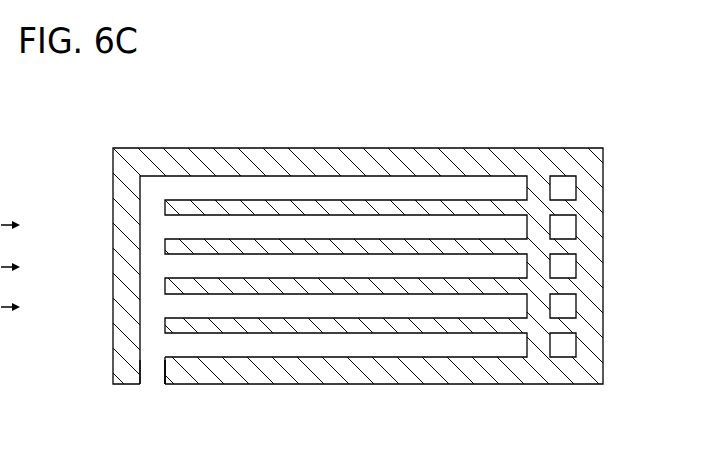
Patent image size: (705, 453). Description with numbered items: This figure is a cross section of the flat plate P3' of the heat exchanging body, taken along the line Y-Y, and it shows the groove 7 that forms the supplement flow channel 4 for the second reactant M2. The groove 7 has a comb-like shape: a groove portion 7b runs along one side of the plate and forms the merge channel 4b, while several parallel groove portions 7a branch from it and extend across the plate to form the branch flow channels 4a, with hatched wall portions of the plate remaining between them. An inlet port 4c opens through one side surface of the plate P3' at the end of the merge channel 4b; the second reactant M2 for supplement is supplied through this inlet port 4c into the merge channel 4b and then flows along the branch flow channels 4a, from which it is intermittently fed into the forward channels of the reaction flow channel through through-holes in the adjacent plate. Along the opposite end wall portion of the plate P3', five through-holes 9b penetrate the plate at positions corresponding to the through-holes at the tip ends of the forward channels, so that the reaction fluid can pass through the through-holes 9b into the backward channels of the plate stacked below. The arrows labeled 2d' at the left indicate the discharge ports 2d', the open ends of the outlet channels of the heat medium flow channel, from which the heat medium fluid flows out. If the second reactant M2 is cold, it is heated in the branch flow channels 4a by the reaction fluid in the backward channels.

The electrode 7 is at (358, 220).
The base 4 is at (358, 266).
The electrode connecting portion 7b is at (181, 242).
The merge channel 4b is at (155, 208).
The electrode finger portions 7a is at (346, 229).
The branch flow channels 4a is at (318, 340).
The flat plate P3' is at (358, 225).
The discharge ports 2d' is at (26, 252).
The through-holes 9b is at (565, 191).
The second reactant M2 is at (153, 384).
The inlet port 4c is at (163, 385).